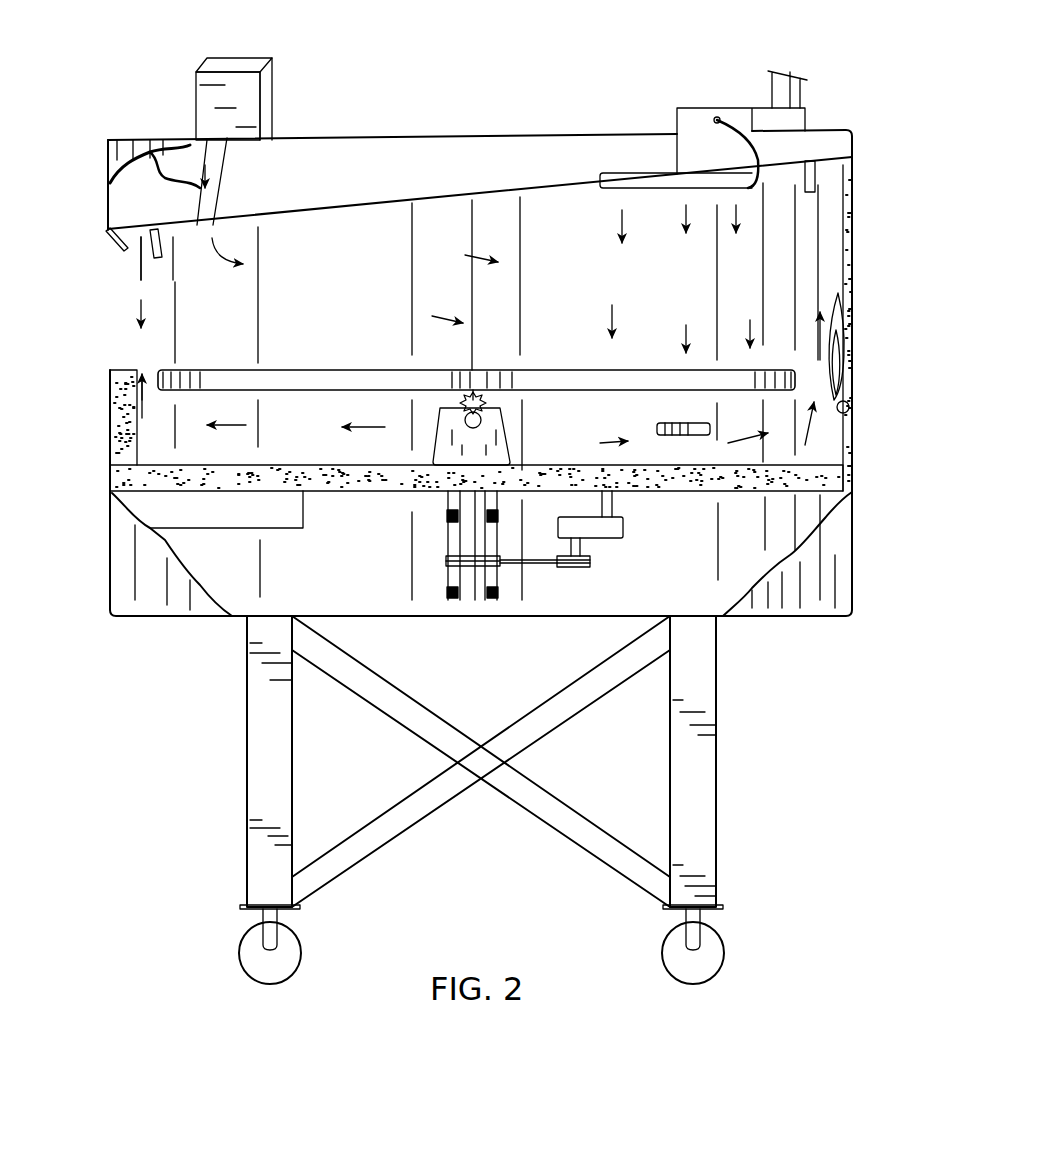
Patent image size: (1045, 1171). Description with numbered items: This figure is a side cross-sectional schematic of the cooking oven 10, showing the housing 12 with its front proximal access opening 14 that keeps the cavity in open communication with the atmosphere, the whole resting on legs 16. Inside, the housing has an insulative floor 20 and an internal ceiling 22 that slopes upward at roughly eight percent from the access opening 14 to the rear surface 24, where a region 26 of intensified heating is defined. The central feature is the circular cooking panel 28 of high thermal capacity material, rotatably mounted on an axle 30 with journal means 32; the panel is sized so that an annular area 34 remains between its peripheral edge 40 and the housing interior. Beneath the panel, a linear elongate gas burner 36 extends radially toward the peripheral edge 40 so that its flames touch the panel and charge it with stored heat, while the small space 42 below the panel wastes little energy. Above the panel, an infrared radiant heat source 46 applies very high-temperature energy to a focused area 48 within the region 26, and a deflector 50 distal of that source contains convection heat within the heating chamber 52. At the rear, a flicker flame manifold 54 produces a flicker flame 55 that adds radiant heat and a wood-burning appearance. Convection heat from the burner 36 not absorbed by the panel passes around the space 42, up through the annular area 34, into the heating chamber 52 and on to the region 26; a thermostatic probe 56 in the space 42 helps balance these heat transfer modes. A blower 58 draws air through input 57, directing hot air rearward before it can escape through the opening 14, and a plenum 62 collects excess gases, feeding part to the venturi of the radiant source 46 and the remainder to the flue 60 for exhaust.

The cooking oven 10 is at (188, 771).
The housing 12 is at (852, 592).
The proximal access opening 14 is at (114, 322).
The legs 16 is at (714, 758).
The insulative floor 20 is at (852, 198).
The internal ceiling 22 is at (362, 205).
The rear surface 24 is at (845, 220).
The region of intensified heating 26 is at (674, 276).
The cooking panel 28 is at (362, 370).
The axle 30 is at (455, 515).
The journal means 32 is at (497, 590).
The annular area 34 is at (133, 400).
The gas burner 36 is at (448, 412).
The peripheral edge 40 is at (137, 378).
The space beneath panel 42 is at (306, 446).
The infrared radiant heat source 46 is at (636, 185).
The focused area 48 is at (680, 333).
The deflector 50 is at (815, 160).
The heating chamber 52 is at (577, 271).
The flicker flame manifold 54 is at (846, 386).
The flicker flame 55 is at (838, 330).
The thermostatic probe 56 is at (660, 420).
The input 57 is at (163, 150).
The blower 58 is at (273, 75).
The flue 60 is at (785, 70).
The plenum 62 is at (717, 124).